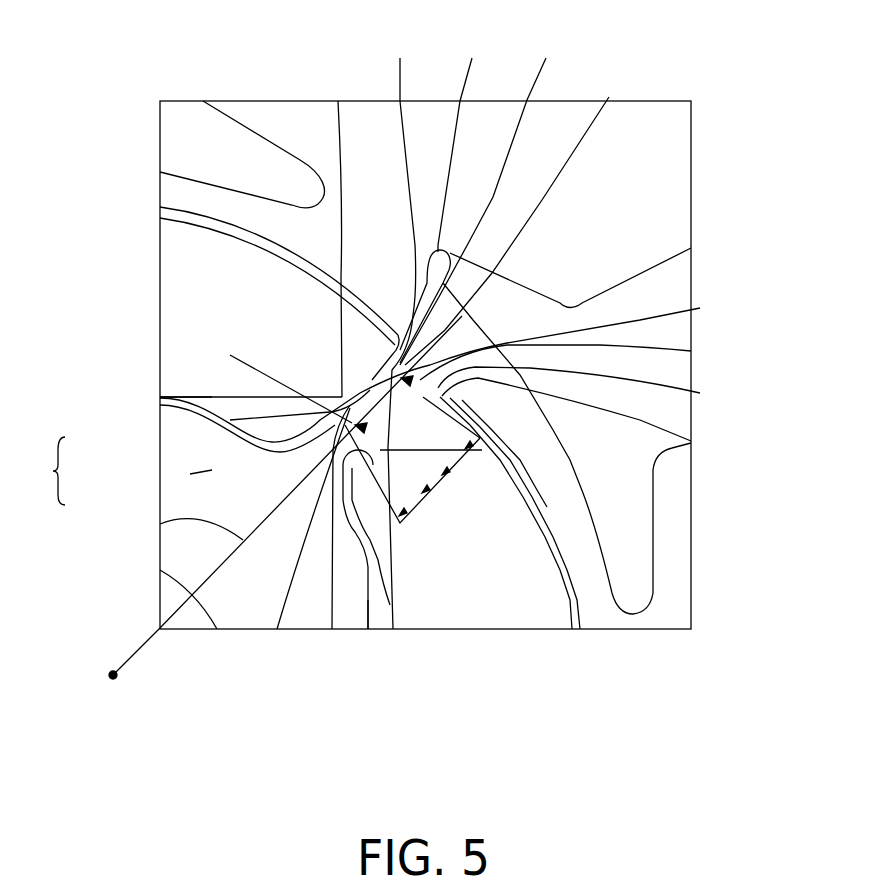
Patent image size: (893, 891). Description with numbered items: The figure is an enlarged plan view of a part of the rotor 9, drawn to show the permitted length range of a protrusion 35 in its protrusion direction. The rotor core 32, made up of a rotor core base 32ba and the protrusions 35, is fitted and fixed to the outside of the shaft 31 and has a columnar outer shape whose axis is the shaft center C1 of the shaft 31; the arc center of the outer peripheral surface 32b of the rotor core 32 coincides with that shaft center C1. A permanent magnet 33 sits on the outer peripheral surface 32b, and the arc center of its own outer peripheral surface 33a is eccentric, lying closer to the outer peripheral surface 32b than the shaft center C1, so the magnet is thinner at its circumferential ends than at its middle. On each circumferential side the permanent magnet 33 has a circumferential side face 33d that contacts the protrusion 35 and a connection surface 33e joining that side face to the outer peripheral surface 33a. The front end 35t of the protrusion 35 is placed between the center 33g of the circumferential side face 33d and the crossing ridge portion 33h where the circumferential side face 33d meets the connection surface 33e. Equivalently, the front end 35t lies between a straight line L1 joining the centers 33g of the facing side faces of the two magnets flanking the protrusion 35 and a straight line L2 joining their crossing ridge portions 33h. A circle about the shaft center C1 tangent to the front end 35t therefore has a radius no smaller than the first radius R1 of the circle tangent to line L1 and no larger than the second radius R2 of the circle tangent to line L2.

The rotor 9 is at (270, 231).
The shaft 31 is at (170, 602).
The rotor core 32 is at (46, 471).
The outer peripheral surface 32b is at (212, 397).
The rotor core base 32ba is at (190, 474).
The permanent magnet 33 is at (220, 290).
The outer peripheral surface 33a is at (338, 101).
The circumferential side face 33d is at (277, 630).
The connection surface 33e is at (750, 445).
The center of the circumferential side face 33g is at (748, 301).
The crossing ridge portion 33h is at (748, 400).
The protrusion 35 is at (230, 420).
The front end of the protrusion 35t is at (609, 97).
The straight line L1 is at (230, 355).
The straight line L2 is at (691, 351).
The first radius R1 is at (160, 524).
The second radius R2 is at (368, 629).
The shaft center C1 is at (113, 678).